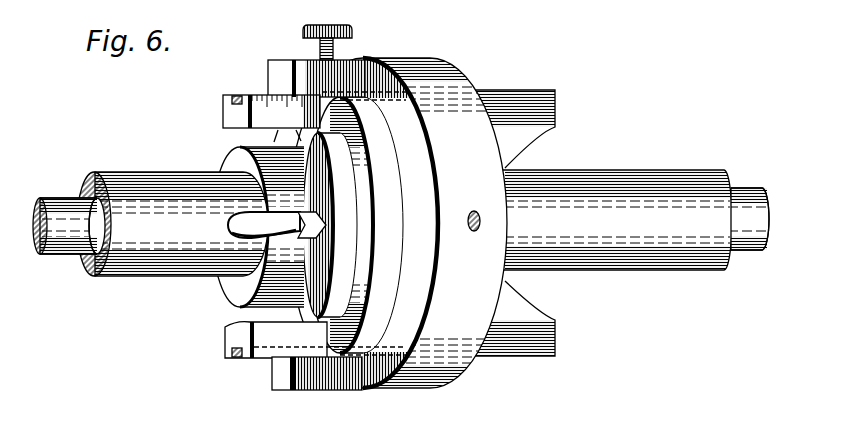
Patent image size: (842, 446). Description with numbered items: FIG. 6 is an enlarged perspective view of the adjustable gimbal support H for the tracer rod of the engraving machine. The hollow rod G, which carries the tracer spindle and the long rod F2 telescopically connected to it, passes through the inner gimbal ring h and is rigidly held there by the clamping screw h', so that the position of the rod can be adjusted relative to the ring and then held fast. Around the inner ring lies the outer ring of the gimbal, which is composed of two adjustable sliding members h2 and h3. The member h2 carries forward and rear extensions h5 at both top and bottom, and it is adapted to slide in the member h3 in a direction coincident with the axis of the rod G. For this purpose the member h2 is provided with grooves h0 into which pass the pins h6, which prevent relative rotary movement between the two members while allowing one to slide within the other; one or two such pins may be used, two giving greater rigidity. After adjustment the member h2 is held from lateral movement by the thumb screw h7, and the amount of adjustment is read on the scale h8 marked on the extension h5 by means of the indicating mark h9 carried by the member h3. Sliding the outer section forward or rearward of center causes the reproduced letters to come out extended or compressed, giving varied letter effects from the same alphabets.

The rod F2 is at (58, 212).
The hollow rod G is at (148, 188).
The adjustable gimbal support H is at (400, 215).
The inner gimbal ring h is at (273, 225).
The clamping screw h' is at (257, 259).
The sliding member h2 is at (396, 214).
The member of the outer gimbal ring h3 is at (467, 199).
The extensions h5 is at (233, 112).
The pins h6 is at (428, 58).
The thumb screw h7 is at (342, 50).
The scale h8 is at (258, 94).
The indicating mark h9 is at (302, 80).
The grooves h0 is at (233, 95).